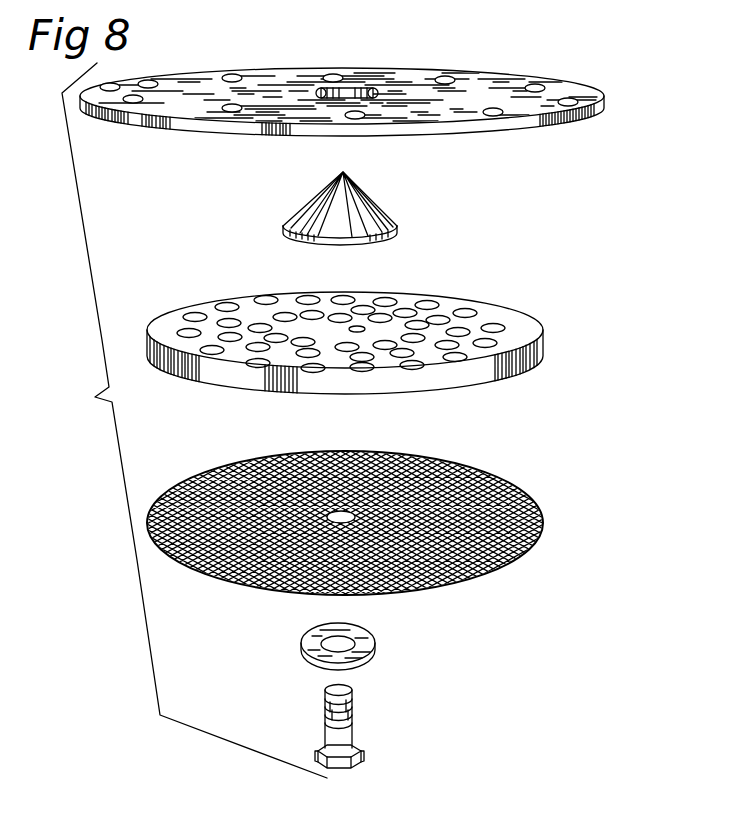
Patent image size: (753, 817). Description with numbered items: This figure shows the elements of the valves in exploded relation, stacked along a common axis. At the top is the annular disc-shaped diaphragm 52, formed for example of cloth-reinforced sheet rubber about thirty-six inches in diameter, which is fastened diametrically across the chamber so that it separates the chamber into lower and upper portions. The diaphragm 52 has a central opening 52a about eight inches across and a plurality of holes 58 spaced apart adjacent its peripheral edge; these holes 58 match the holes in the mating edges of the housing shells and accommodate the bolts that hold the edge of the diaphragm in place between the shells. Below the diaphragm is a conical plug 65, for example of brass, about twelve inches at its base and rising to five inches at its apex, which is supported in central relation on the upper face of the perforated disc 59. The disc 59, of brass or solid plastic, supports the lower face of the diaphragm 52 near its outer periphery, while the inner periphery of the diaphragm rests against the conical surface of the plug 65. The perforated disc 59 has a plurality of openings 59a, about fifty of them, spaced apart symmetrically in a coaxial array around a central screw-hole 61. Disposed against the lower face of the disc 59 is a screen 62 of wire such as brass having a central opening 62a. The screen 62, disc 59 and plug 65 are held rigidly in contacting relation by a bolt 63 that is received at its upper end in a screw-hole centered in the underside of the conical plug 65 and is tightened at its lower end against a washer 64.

The diaphragm 52 is at (590, 128).
The central opening 52a is at (356, 90).
The holes 58 is at (228, 110).
The conical plug 65 is at (391, 203).
The perforated disc 59 is at (543, 332).
The openings 59a is at (467, 306).
The central screw-hole 61 is at (357, 331).
The screen 62 is at (533, 553).
The central opening 62a is at (341, 511).
The washer 64 is at (376, 660).
The bolt 63 is at (353, 740).